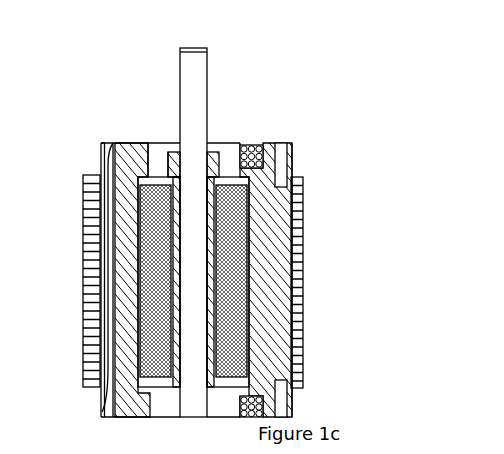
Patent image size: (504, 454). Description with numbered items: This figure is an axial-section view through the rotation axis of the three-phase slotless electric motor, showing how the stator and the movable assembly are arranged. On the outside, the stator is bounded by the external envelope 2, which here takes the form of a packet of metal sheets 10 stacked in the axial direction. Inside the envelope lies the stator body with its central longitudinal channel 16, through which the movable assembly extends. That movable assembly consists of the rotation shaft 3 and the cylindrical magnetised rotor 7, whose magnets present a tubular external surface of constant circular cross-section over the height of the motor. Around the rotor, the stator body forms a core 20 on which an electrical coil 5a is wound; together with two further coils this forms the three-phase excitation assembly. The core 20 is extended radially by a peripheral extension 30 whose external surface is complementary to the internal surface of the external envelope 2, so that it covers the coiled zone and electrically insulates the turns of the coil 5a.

The external envelope 2 is at (98, 263).
The rotation shaft 3 is at (245, 80).
The electrical coil 5a is at (325, 358).
The cylindrical magnetised rotor 7 is at (128, 142).
The metal sheets 10 is at (363, 183).
The central longitudinal channel 16 is at (280, 135).
The core 20 is at (303, 240).
The peripheral extension 30 is at (363, 292).